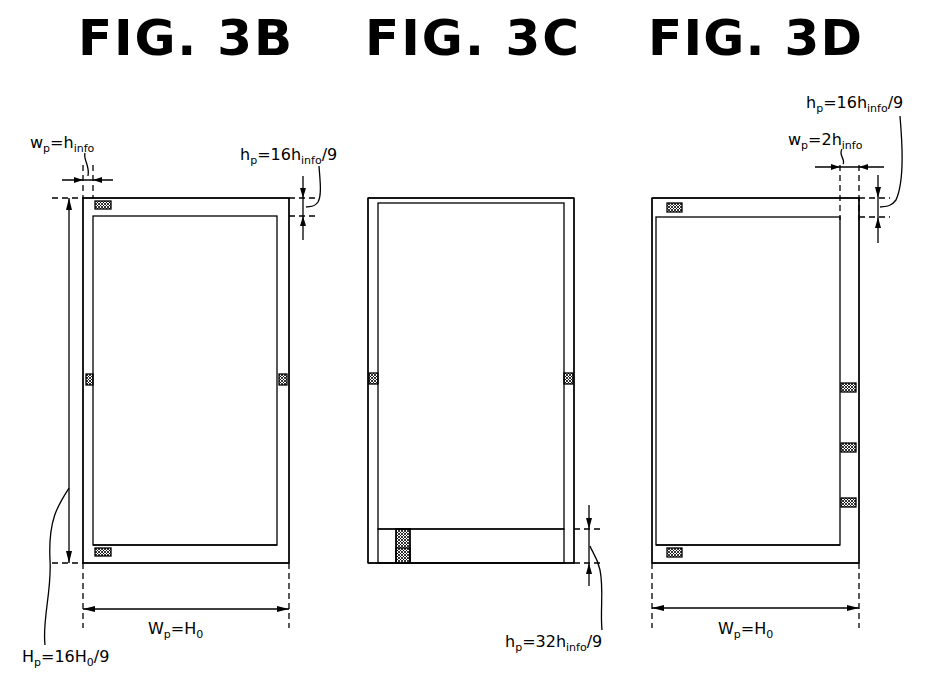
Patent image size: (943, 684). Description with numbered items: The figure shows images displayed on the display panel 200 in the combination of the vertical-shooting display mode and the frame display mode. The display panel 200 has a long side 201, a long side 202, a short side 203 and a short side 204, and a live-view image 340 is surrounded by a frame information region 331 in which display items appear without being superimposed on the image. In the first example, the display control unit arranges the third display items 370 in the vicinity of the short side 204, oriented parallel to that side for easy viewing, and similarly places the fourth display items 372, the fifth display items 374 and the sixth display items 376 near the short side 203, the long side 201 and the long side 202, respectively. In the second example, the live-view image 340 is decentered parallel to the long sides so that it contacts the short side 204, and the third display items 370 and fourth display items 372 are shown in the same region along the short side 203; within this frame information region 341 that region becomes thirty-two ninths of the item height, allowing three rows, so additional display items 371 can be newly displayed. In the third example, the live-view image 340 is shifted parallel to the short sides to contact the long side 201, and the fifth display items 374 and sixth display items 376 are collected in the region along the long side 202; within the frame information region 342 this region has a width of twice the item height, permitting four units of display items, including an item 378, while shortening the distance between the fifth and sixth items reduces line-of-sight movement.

In FIG. 3B, the display panel 200 is at (228, 130).
In FIG. 3C, the display panel 200 is at (540, 135).
In FIG. 3D, the display panel 200 is at (742, 145).
In FIG. 3B, the long side 201 is at (83, 288).
In FIG. 3C, the long side 201 is at (368, 265).
In FIG. 3D, the long side 201 is at (652, 406).
In FIG. 3B, the long side 202 is at (289, 310).
In FIG. 3C, the long side 202 is at (574, 272).
In FIG. 3D, the long side 202 is at (859, 277).
In FIG. 3B, the short side 203 is at (190, 563).
In FIG. 3C, the short side 203 is at (492, 563).
In FIG. 3D, the short side 203 is at (748, 563).
In FIG. 3B, the short side 204 is at (150, 198).
In FIG. 3C, the short side 204 is at (418, 198).
In FIG. 3D, the short side 204 is at (660, 198).
In FIG. 3B, the live-view image 340 is at (207, 216).
In FIG. 3C, the live-view image 340 is at (507, 207).
In FIG. 3D, the live-view image 340 is at (666, 331).
In FIG. 3C, the frame information region 341 is at (489, 535).
In FIG. 3D, the frame information region 342 is at (812, 552).
In FIG. 3B, the frame information region 331 is at (248, 554).
In FIG. 3B, the third display items 370 is at (106, 210).
In FIG. 3C, the third display items 370 is at (396, 536).
In FIG. 3D, the third display items 370 is at (675, 213).
In FIG. 3C, the display items 371 is at (412, 545).
In FIG. 3B, the fourth display items 372 is at (102, 546).
In FIG. 3C, the fourth display items 372 is at (415, 556).
In FIG. 3D, the fourth display items 372 is at (694, 529).
In FIG. 3B, the fifth display items 374 is at (90, 386).
In FIG. 3C, the fifth display items 374 is at (373, 385).
In FIG. 3D, the fifth display items 374 is at (845, 393).
In FIG. 3B, the sixth display items 376 is at (280, 386).
In FIG. 3C, the sixth display items 376 is at (568, 385).
In FIG. 3D, the sixth display items 376 is at (845, 453).
In FIG. 3D, the information indicator 378 is at (845, 508).